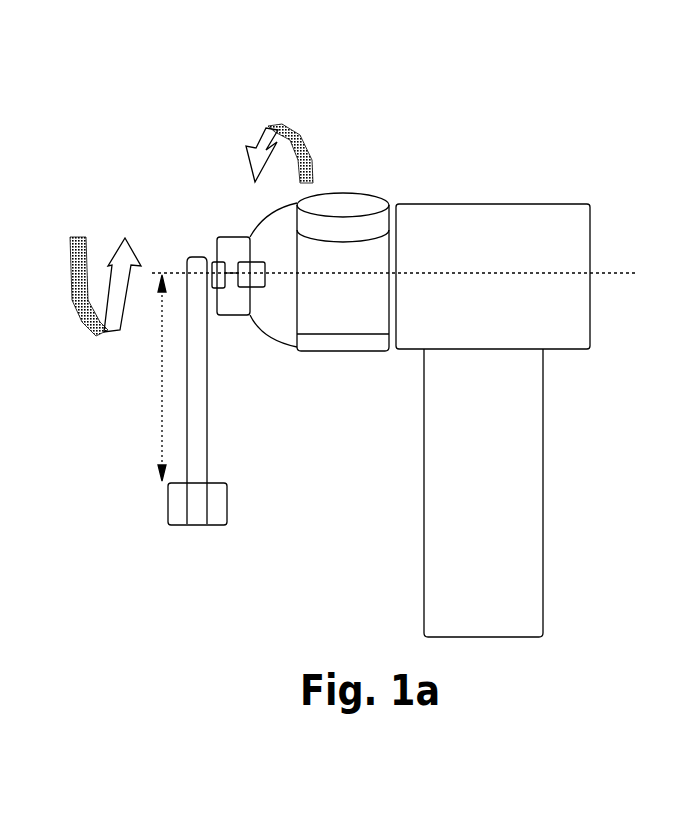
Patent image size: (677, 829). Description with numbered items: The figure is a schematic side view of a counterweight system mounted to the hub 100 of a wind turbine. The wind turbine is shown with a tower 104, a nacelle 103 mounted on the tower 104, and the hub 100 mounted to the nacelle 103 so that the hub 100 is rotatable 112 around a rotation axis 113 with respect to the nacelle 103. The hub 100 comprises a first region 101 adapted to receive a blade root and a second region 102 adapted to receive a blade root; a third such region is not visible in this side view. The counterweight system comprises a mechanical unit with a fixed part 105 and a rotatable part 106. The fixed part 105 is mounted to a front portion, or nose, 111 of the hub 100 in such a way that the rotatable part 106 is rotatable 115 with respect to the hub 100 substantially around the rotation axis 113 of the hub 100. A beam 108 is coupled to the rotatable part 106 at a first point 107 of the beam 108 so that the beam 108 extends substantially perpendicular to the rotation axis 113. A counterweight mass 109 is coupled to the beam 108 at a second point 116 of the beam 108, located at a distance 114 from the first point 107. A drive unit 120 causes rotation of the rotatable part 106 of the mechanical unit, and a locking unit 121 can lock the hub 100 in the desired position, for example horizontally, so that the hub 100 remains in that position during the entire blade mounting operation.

The hub 100 is at (252, 202).
The first region 101 is at (347, 197).
The second region 102 is at (368, 343).
The nacelle 103 is at (493, 240).
The tower 104 is at (515, 486).
The fixed part 105 is at (227, 297).
The rotatable part 106 is at (213, 268).
The first point 107 is at (195, 258).
The beam 108 is at (205, 462).
The counterweight mass 109 is at (178, 503).
The front portion 111 is at (255, 303).
The rotation of the hub 112 is at (281, 126).
The rotation axis 113 is at (538, 273).
The distance 114 is at (158, 440).
The rotation of the rotatable part 115 is at (95, 333).
The second point 116 is at (197, 507).
The drive unit 120 is at (218, 237).
The locking unit 121 is at (216, 290).